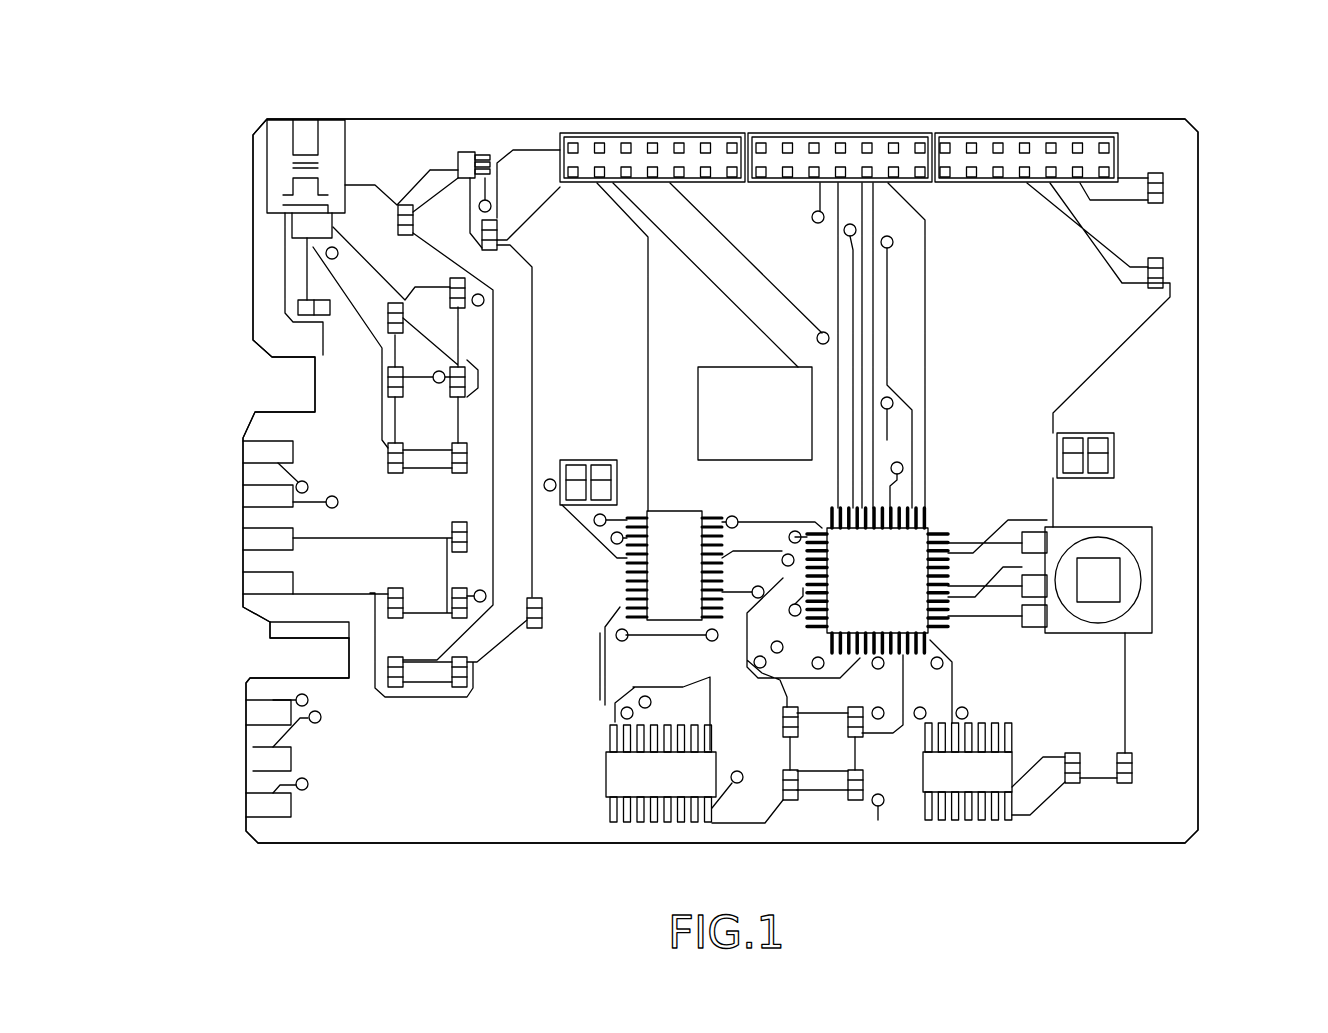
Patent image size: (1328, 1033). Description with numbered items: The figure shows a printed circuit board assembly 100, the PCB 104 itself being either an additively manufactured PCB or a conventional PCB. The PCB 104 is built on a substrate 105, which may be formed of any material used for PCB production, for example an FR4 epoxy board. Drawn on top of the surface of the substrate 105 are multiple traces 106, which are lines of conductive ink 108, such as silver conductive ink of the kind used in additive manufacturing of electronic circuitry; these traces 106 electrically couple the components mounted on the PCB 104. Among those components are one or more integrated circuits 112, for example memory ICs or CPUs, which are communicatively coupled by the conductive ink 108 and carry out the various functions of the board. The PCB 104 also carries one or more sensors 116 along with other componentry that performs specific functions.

The circuit board assembly 100 is at (187, 73).
The PCB 104 is at (263, 120).
The substrate 105 is at (1165, 395).
The traces 106 is at (935, 237).
The conductive ink 108 is at (857, 342).
The integrated circuits 112 is at (672, 565).
The sensors 116 is at (755, 413).